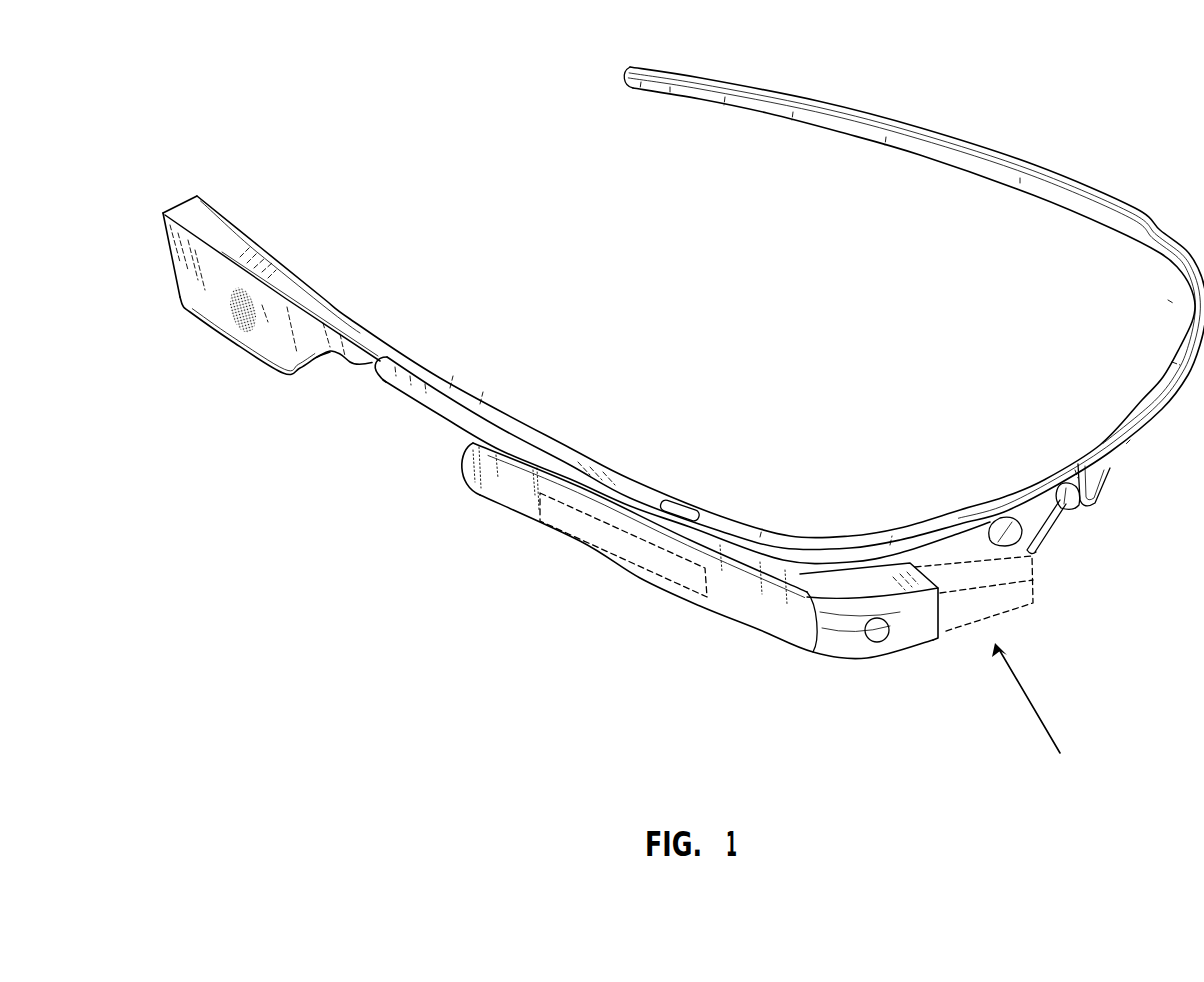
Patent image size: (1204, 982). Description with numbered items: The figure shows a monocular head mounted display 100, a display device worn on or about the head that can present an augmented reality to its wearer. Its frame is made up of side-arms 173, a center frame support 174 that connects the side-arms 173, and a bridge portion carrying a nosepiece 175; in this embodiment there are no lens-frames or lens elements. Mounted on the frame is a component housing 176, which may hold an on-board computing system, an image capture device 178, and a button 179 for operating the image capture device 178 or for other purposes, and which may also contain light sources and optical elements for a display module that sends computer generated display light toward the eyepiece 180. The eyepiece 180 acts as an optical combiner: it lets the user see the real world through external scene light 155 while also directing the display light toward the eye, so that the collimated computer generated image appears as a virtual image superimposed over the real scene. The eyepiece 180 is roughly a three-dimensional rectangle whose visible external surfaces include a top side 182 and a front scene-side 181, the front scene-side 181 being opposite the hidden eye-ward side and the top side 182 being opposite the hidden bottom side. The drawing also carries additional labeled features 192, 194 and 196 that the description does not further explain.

The head mounted display 100 is at (1042, 99).
The external scene light 155 is at (1053, 735).
The side-arms 173 is at (817, 102).
The center frame support 174 is at (1053, 472).
The nosepiece 175 is at (1100, 480).
The component housing 176 is at (596, 553).
The image capture device 178 is at (873, 643).
The button 179 is at (668, 500).
The eyepiece 180 is at (1000, 602).
The front scene-side 181 is at (981, 604).
The top side 182 is at (986, 575).
The touchpad 192 is at (660, 558).
The frame strip 194 is at (416, 398).
The display prism 196 is at (233, 309).